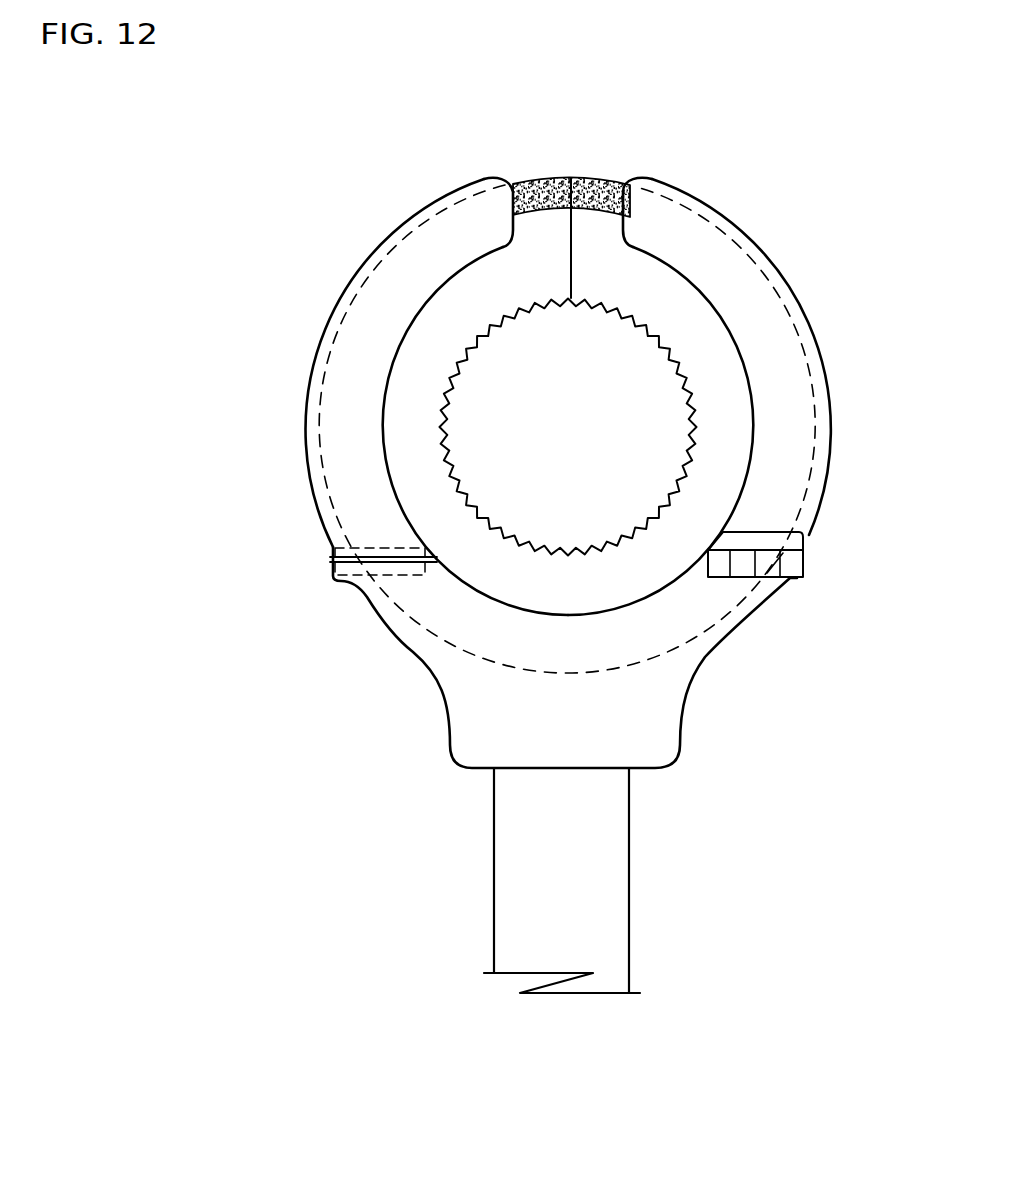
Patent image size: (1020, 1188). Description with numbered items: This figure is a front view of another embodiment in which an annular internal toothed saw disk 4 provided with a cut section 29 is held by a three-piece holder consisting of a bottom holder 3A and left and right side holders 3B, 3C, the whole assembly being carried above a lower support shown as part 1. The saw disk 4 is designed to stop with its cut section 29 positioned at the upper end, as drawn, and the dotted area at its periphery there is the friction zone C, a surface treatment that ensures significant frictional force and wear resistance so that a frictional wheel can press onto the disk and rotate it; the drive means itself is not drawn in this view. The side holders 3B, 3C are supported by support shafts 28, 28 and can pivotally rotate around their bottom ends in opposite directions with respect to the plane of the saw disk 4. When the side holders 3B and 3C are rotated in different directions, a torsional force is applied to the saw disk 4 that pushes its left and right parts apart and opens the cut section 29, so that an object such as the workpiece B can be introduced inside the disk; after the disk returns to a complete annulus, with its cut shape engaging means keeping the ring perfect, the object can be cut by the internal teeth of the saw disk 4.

The shaft 1 is at (602, 912).
The bottom holder 3A is at (473, 713).
The left side holder 3B is at (348, 452).
The right side holder 3C is at (795, 444).
The internal toothed saw disk 4 is at (610, 230).
The support shaft 28 is at (375, 572).
The cut section 29 is at (571, 258).
The gear B is at (468, 353).
The friction zone C is at (590, 187).